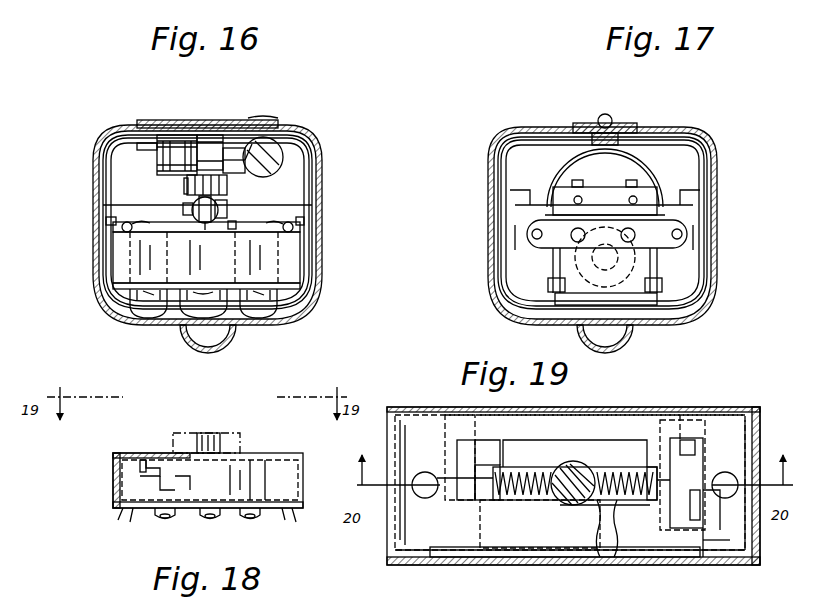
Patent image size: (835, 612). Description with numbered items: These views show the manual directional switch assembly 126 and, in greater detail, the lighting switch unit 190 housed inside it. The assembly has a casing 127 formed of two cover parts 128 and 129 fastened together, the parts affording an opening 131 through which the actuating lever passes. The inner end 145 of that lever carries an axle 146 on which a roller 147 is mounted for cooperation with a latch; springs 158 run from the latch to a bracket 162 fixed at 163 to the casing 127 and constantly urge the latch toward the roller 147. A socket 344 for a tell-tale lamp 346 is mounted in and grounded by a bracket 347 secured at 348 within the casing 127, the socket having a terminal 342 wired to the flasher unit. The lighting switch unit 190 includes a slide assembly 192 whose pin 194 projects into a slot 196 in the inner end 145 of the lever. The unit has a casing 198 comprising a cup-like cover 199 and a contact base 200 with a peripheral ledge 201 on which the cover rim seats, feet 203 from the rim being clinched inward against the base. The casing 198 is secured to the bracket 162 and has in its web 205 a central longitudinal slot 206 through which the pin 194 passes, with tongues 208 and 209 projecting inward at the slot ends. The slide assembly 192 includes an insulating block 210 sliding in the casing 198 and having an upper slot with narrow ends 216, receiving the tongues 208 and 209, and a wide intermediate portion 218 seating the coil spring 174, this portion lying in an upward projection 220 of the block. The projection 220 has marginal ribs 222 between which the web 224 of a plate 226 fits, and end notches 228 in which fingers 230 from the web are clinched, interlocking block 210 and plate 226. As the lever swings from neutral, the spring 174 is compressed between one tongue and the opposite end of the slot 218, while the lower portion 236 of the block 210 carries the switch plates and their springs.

In FIG. 16, the manual directional switch assembly 126 is at (179, 216).
In FIG. 17, the manual directional switch assembly 126 is at (599, 217).
In FIG. 16, the casing 127 is at (109, 123).
In FIG. 17, the casing 127 is at (536, 126).
In FIG. 16, the cover part 128 is at (104, 182).
In FIG. 17, the cover part 128 is at (718, 177).
In FIG. 16, the cover part 129 is at (100, 249).
In FIG. 17, the cover part 129 is at (720, 233).
In FIG. 16, the opening 131 is at (183, 212).
In FIG. 16, the inner end of the lever 145 is at (184, 184).
In FIG. 16, the axle 146 is at (236, 158).
In FIG. 16, the roller 147 is at (228, 193).
In FIG. 16, the springs 158 is at (122, 227).
In FIG. 16, the bracket 162 is at (236, 225).
In FIG. 16, the bracket fastening 163 is at (106, 221).
In FIG. 19, the coil spring 174 is at (625, 473).
In FIG. 16, the lighting switch unit 190 is at (202, 270).
In FIG. 18, the lighting switch unit 190 is at (194, 481).
In FIG. 19, the lighting switch unit 190 is at (596, 482).
In FIG. 18, the slide assembly 192 is at (160, 472).
In FIG. 19, the slide assembly 192 is at (713, 540).
In FIG. 16, the pin 194 is at (192, 206).
In FIG. 19, the pin 194 is at (573, 461).
In FIG. 16, the slot 196 is at (227, 209).
In FIG. 18, the casing 198 is at (112, 452).
In FIG. 19, the casing 198 is at (749, 406).
In FIG. 16, the cup-like cover 199 is at (300, 258).
In FIG. 18, the cup-like cover 199 is at (303, 465).
In FIG. 19, the cup-like cover 199 is at (408, 415).
In FIG. 16, the contact base 200 is at (300, 284).
In FIG. 18, the contact base 200 is at (115, 505).
In FIG. 19, the contact base 200 is at (752, 565).
In FIG. 19, the peripheral ledge 201 is at (762, 522).
In FIG. 18, the feet 203 is at (130, 520).
In FIG. 18, the web 205 is at (135, 455).
In FIG. 19, the web 205 is at (420, 555).
In FIG. 19, the central longitudinal slot 206 is at (532, 468).
In FIG. 19, the tongue 208 is at (515, 460).
In FIG. 19, the tongue 209 is at (652, 478).
In FIG. 18, the block 210 is at (168, 474).
In FIG. 19, the block 210 is at (720, 530).
In FIG. 19, the narrow slot ends 216 is at (460, 478).
In FIG. 19, the wide intermediate slot portion 218 is at (606, 514).
In FIG. 18, the upwardly extending projection 220 is at (140, 466).
In FIG. 19, the upwardly extending projection 220 is at (692, 566).
In FIG. 19, the longitudinal marginal ribs 222 is at (624, 430).
In FIG. 19, the web of the plate 224 is at (598, 530).
In FIG. 19, the plate 226 is at (600, 560).
In FIG. 19, the end notches 228 is at (446, 432).
In FIG. 18, the fingers 230 is at (136, 480).
In FIG. 19, the fingers 230 is at (462, 455).
In FIG. 19, the lower portion of the block 236 is at (705, 560).
In FIG. 16, the terminal 342 is at (150, 142).
In FIG. 16, the socket 344 is at (178, 138).
In FIG. 16, the tell-tale lamp 346 is at (272, 148).
In FIG. 16, the bracket 347 is at (215, 137).
In FIG. 17, the bracket 347 is at (640, 145).
In FIG. 17, the bracket fastening 348 is at (607, 123).